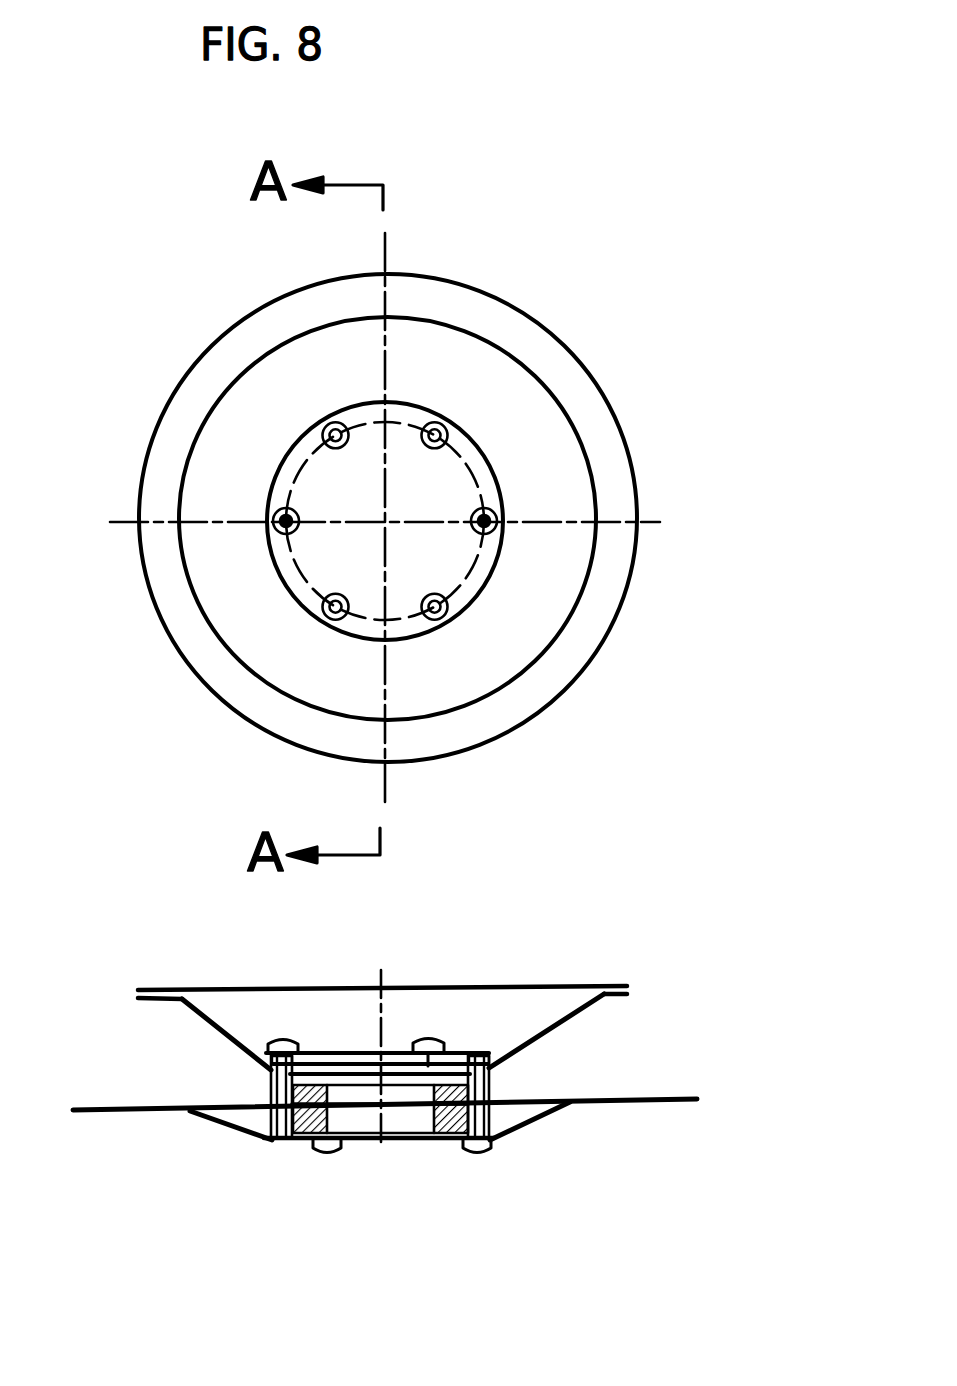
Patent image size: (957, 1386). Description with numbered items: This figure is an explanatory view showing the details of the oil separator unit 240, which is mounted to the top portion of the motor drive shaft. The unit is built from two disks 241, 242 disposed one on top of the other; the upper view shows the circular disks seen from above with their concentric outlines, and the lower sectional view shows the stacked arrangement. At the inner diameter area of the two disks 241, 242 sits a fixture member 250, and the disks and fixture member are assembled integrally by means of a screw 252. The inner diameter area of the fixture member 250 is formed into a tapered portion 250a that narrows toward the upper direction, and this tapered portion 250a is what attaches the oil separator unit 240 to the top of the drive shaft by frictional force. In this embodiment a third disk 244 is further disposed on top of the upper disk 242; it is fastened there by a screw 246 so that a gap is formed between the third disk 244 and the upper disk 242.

The oil separator unit 240 is at (470, 205).
The disk 241 is at (565, 1116).
The upper disk 242 is at (208, 1028).
The third disk 244 is at (460, 490).
The screw 246 is at (283, 1043).
The fixture member 250 is at (305, 1142).
The tapered portion 250a is at (377, 1140).
The screw 252 is at (480, 1147).